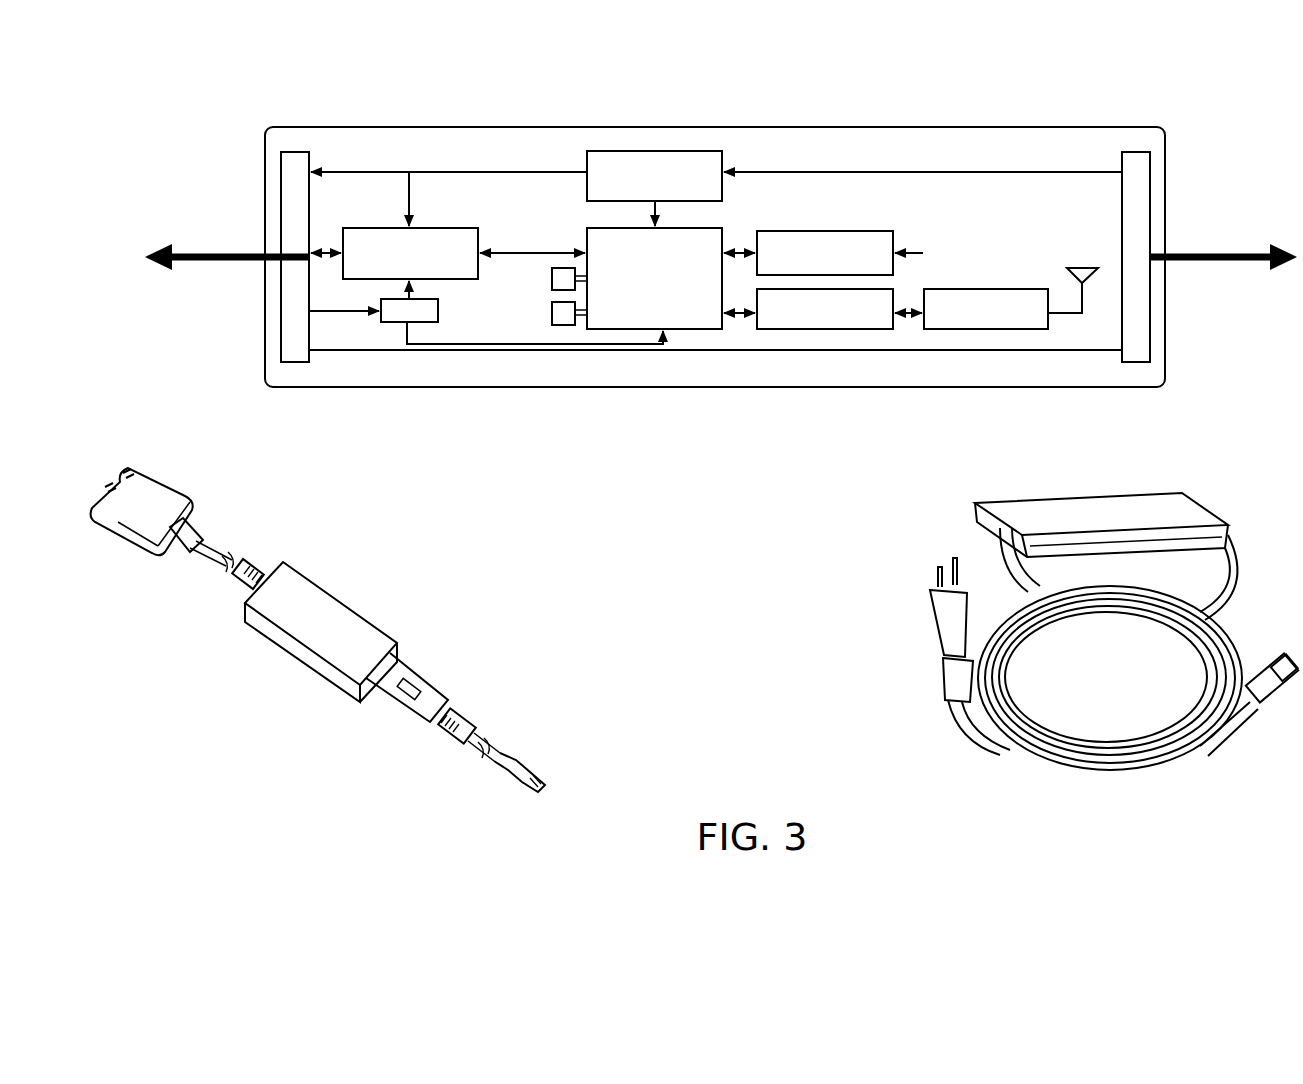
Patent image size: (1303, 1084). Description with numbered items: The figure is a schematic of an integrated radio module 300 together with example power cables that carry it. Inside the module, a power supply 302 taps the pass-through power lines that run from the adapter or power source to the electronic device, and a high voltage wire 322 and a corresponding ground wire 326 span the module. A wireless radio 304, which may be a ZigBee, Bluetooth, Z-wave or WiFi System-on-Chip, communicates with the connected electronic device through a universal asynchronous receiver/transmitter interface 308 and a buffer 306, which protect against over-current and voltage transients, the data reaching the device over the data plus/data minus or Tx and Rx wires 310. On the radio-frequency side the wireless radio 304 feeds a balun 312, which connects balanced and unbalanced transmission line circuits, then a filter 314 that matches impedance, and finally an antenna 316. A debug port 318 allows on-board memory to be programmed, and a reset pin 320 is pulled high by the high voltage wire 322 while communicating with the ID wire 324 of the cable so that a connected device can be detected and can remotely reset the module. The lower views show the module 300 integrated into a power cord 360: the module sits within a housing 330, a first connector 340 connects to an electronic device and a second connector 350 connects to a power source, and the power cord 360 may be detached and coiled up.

The integrated radio module 300 is at (270, 90).
The power supply 302 is at (722, 163).
The wireless radio 304 is at (716, 228).
The buffer 306 is at (430, 228).
The universal asynchronous receiver/transmitter interface 308 is at (516, 253).
The data plus/data minus wires or Tx and Rx wires 310 is at (327, 250).
The balun 312 is at (893, 289).
The filter 314 is at (987, 289).
The antenna 316 is at (1082, 268).
The debug port 318 is at (825, 231).
The reset pin 320 is at (440, 310).
The high voltage wire 322 is at (893, 172).
The ID wire 324 is at (332, 313).
The ground wire 326 is at (783, 350).
The housing 330 is at (345, 605).
The first connector 340 is at (470, 713).
The second connector 350 is at (255, 563).
The power cord 360 is at (925, 525).